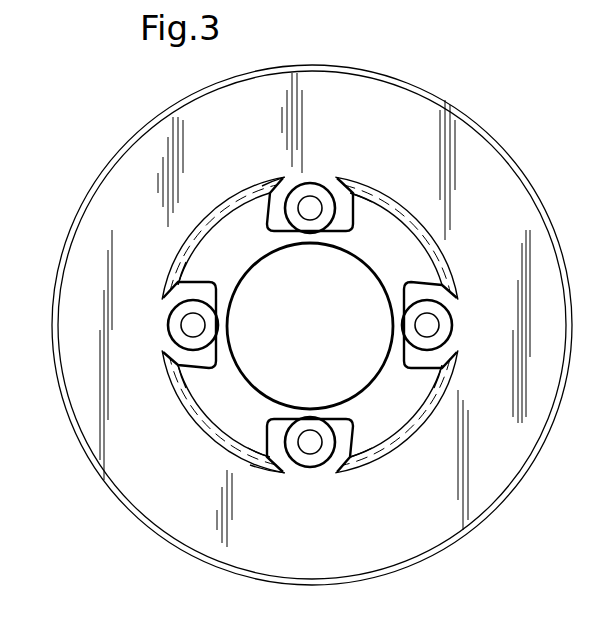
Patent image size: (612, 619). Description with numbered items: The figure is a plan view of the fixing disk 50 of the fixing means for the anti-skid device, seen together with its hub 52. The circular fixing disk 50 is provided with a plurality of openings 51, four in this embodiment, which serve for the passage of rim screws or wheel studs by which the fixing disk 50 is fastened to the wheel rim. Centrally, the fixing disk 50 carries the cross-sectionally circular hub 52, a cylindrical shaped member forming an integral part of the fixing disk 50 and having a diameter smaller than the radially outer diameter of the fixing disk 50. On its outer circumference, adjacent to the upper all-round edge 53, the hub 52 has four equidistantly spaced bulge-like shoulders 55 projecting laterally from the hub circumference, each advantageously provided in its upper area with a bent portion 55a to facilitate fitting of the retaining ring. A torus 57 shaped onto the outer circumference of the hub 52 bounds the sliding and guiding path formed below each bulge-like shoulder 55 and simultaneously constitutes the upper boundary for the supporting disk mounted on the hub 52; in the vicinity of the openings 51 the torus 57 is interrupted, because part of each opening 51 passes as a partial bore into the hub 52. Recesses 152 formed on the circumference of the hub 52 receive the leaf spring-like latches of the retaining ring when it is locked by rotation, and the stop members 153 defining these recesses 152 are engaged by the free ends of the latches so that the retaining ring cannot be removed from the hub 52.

The fixing disk 50 is at (360, 63).
The openings 51 is at (312, 194).
The hub 52 is at (343, 258).
The upper all-round edge 53 is at (378, 262).
The bulge-like shoulders 55 is at (237, 207).
The bent portion 55a is at (221, 439).
The torus 57 is at (170, 365).
The recesses 152 is at (352, 190).
The stop members 153 is at (271, 184).